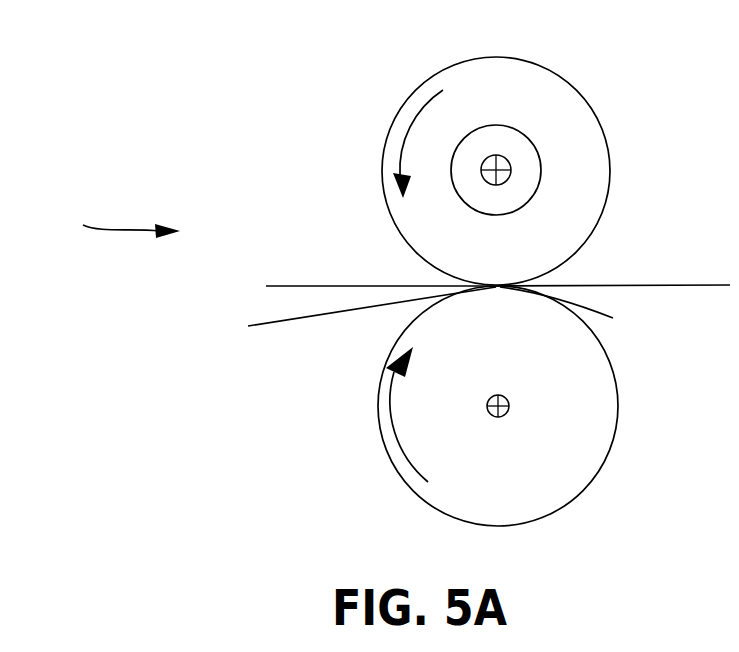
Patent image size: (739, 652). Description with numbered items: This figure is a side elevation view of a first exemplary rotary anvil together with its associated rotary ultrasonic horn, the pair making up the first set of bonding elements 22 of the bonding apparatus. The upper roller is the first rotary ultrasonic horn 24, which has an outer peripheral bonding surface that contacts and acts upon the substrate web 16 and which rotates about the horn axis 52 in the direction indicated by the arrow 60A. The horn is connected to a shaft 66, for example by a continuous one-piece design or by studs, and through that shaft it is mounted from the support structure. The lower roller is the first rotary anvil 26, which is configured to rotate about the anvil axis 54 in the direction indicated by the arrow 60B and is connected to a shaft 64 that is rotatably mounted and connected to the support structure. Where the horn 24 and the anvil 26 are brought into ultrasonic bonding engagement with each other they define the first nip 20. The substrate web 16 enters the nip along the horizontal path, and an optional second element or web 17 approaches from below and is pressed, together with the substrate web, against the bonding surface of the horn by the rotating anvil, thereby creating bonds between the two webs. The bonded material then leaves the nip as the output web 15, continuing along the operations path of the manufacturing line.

The laminated output web 15 is at (660, 284).
The substrate web 16 is at (313, 286).
The web 17 is at (267, 324).
The first nip 20 is at (616, 319).
The first set of bonding elements 22 is at (111, 225).
The first rotary ultrasonic horn 24 is at (602, 126).
The first rotary anvil 26 is at (611, 455).
The horn axis 52 is at (511, 165).
The anvil axis 54 is at (509, 402).
The arrow 60A is at (402, 140).
The arrow 60B is at (396, 403).
The shaft 64 is at (490, 416).
The shaft 66 is at (488, 156).